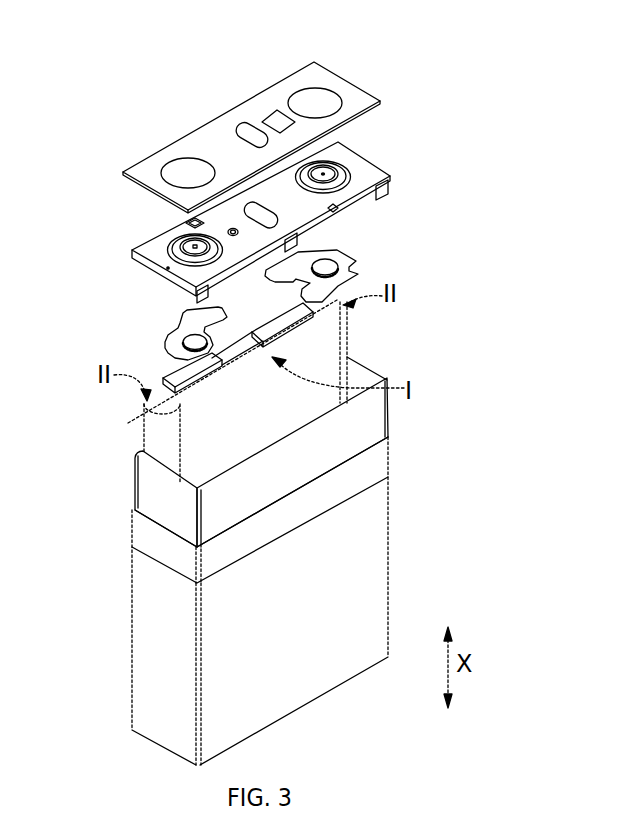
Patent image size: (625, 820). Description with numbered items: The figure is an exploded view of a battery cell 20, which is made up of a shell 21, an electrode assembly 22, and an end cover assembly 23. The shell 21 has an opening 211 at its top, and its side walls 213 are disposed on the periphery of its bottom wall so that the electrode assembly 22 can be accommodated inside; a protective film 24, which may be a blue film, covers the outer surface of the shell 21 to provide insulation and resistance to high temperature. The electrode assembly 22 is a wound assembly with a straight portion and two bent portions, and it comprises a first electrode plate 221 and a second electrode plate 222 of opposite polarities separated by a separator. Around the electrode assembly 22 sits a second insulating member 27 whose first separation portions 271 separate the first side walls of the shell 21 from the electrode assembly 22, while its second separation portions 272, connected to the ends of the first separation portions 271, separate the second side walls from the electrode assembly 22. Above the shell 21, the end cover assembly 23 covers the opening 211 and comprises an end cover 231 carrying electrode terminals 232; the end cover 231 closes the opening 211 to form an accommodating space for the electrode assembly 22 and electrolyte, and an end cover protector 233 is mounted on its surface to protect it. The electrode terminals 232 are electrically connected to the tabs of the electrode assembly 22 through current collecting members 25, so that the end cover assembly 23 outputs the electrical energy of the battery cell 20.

The battery cell 20 is at (238, 30).
The end cover protector 233 is at (193, 142).
The end cover assembly 23 is at (230, 222).
The end cover 231 is at (356, 170).
The electrode terminal 232 is at (181, 241).
The current collecting member 25 is at (343, 262).
The electrode assembly 22 is at (256, 391).
The first electrode plate 221 is at (326, 368).
The second electrode plate 222 is at (148, 416).
The second insulating member 27 is at (262, 469).
The first separation portion 271 is at (373, 415).
The second separation portion 272 is at (143, 483).
The shell 21 is at (274, 595).
The opening 211 is at (133, 511).
The side wall 213 is at (358, 477).
The protective film 24 is at (383, 588).